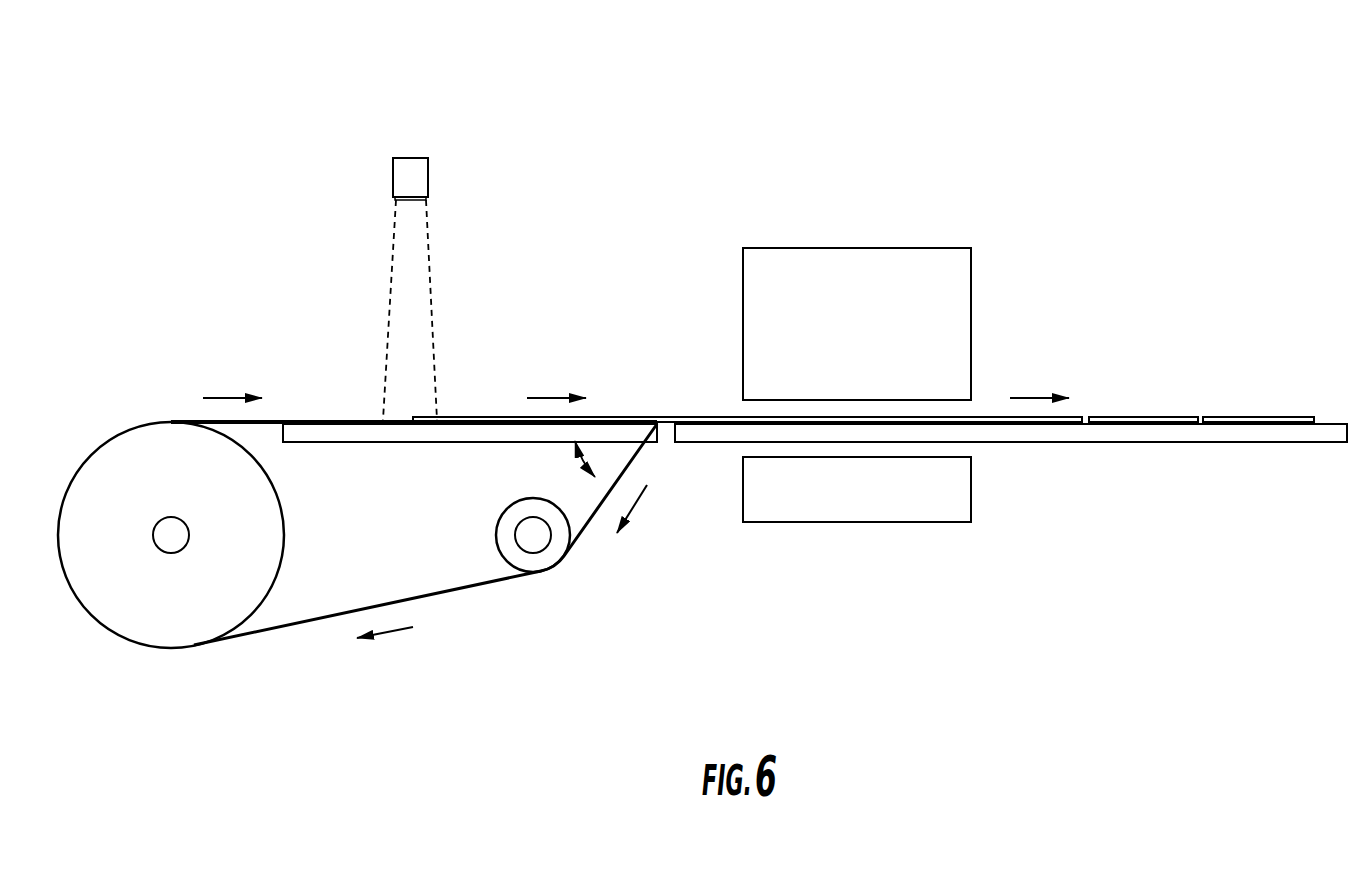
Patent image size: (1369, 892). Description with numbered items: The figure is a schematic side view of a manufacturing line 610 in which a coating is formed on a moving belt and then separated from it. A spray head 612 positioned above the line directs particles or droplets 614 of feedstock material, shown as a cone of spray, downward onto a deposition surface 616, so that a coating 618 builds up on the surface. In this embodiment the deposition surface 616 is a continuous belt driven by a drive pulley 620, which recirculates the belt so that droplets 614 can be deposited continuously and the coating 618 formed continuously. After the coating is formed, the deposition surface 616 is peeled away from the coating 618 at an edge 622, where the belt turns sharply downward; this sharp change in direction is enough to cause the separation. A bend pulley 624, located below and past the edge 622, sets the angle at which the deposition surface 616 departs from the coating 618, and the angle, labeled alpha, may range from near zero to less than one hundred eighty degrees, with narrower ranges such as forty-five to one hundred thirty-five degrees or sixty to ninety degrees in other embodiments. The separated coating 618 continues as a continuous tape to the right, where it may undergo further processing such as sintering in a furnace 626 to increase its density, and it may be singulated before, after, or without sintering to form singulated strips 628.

The manufacturing line 610 is at (228, 153).
The spray head 612 is at (407, 177).
The droplets 614 is at (390, 282).
The deposition surface 616 is at (203, 421).
The coating 618 is at (478, 417).
The drive pulley 620 is at (208, 615).
The edge 622 is at (655, 428).
The bend pulley 624 is at (513, 518).
The furnace 626 is at (928, 285).
The singulated strips 628 is at (1183, 406).